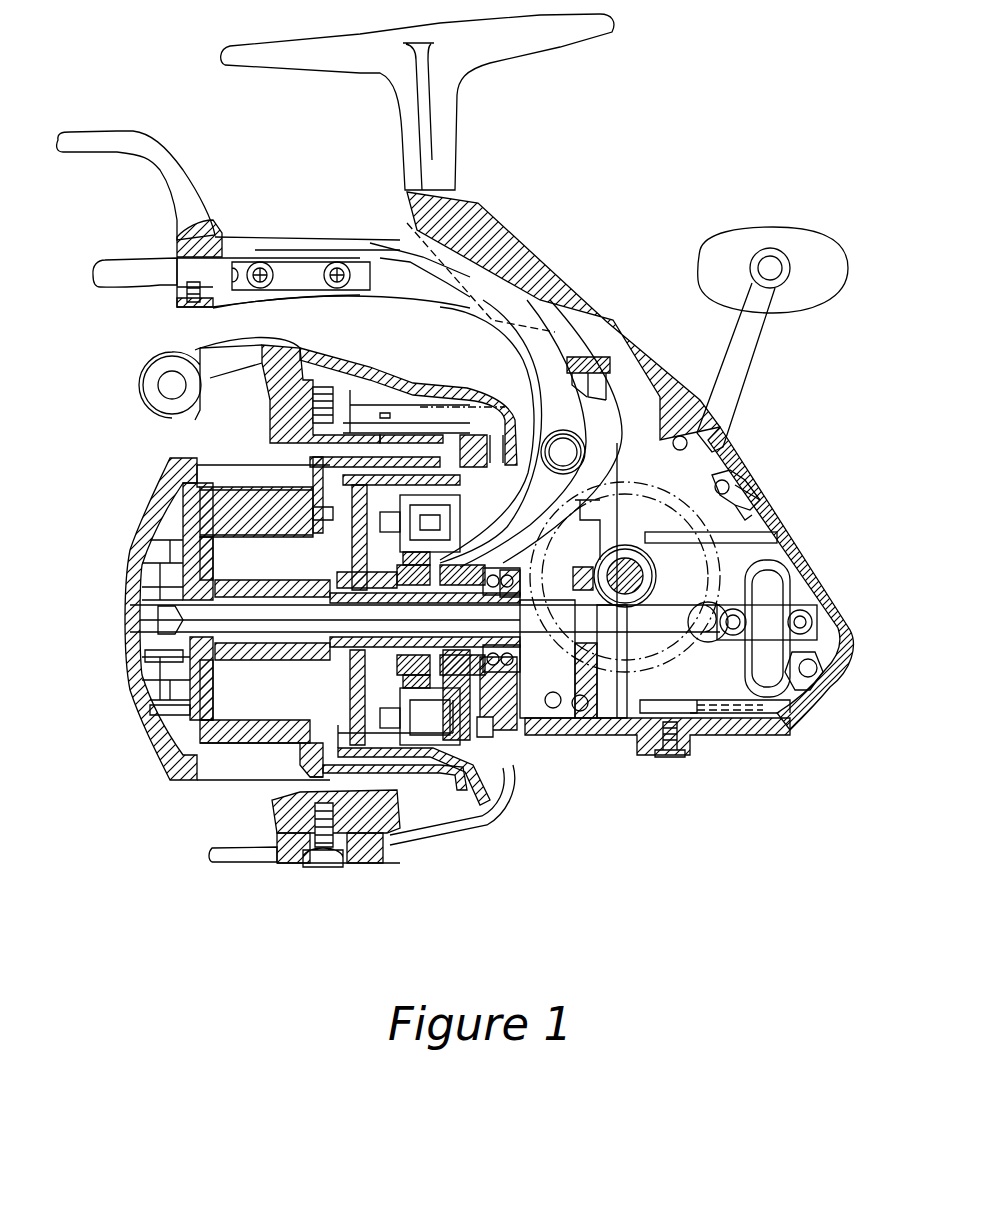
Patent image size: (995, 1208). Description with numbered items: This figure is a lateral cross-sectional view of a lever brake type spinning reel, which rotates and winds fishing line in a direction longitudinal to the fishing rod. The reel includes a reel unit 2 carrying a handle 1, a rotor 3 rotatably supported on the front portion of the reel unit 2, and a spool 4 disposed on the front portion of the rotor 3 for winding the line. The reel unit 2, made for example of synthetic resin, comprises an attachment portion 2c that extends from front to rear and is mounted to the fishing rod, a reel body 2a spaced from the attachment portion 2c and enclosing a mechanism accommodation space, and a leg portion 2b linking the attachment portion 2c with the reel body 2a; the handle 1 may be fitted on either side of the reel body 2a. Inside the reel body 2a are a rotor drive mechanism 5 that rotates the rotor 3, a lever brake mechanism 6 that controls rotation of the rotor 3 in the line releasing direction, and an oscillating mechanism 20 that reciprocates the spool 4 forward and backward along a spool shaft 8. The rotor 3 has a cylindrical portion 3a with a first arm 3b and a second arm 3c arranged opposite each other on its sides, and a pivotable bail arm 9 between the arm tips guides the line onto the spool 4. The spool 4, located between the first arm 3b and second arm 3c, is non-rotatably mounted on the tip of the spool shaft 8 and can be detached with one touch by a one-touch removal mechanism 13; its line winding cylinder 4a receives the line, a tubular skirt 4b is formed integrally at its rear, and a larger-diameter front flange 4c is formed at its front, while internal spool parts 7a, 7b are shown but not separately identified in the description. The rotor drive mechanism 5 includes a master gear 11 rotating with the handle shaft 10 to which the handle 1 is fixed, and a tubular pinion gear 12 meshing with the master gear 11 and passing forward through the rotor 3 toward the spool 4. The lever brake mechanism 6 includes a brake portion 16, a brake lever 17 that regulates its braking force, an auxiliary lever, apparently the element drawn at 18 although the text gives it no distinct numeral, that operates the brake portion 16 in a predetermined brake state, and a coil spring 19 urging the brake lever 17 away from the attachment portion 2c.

The handle 1 is at (745, 236).
The reel unit 2 is at (774, 442).
The reel body 2a is at (770, 508).
The leg portion 2b is at (525, 245).
The attachment portion 2c is at (549, 32).
The rotor 3 is at (447, 445).
The cylindrical portion 3a is at (353, 750).
The first arm 3b is at (412, 385).
The second arm 3c is at (420, 847).
The spool 4 is at (278, 488).
The line winding cylinder 4a is at (232, 490).
The tubular skirt 4b is at (300, 779).
The front flange 4c is at (196, 413).
The rotor drive mechanism 5 is at (707, 447).
The lever brake mechanism 6 is at (470, 490).
The drag washer 7a is at (152, 715).
The drag washer 7b is at (130, 667).
The spool shaft 8 is at (627, 713).
The bail arm 9 is at (150, 420).
The handle shaft 10 is at (661, 519).
The master gear 11 is at (652, 753).
The pinion gear 12 is at (543, 652).
The one-touch removal mechanism 13 is at (118, 627).
The brake portion 16 is at (445, 745).
The brake lever 17 is at (287, 225).
The space 18 is at (483, 290).
The coil spring 19 is at (620, 325).
The oscillating mechanism 20 is at (733, 700).